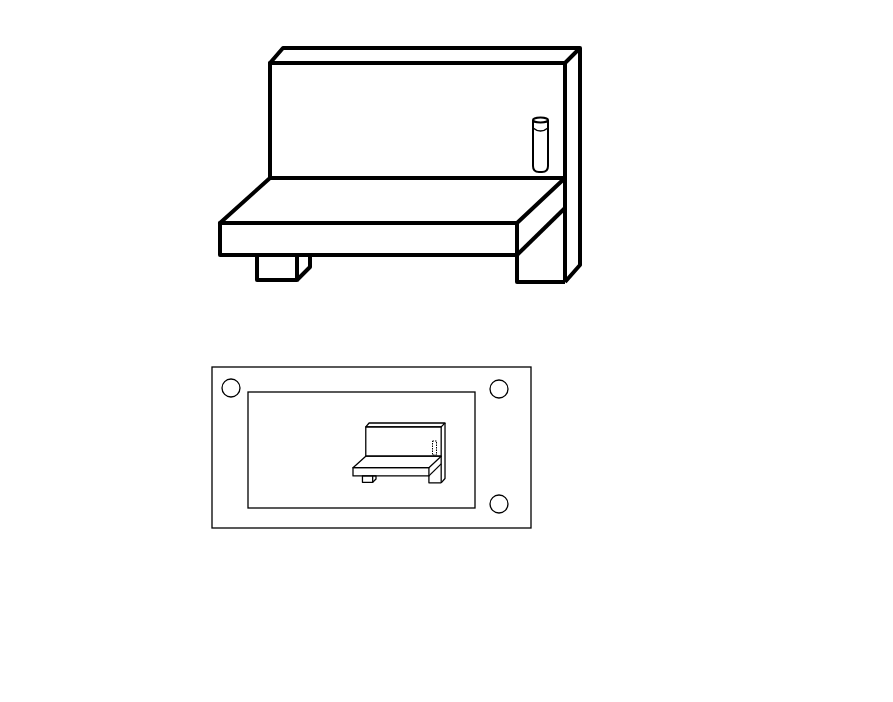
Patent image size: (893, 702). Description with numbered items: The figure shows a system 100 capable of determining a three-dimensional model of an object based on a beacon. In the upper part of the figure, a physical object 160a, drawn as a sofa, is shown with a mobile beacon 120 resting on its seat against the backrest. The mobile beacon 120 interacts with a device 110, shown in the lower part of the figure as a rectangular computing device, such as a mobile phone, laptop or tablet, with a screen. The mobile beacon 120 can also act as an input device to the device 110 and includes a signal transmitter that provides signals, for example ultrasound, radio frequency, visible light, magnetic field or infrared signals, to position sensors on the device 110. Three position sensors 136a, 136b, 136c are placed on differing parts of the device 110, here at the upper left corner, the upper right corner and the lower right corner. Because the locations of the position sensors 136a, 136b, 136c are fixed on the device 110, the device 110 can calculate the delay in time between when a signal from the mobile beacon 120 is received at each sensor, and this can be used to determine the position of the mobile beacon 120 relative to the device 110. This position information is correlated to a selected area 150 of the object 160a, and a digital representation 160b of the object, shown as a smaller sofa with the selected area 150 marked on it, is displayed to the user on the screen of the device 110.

The system 100 is at (76, 80).
The object 160a is at (268, 62).
The mobile beacon 120 is at (531, 146).
The device 110 is at (422, 561).
The position sensor 136a is at (221, 388).
The position sensor 136b is at (508, 390).
The position sensor 136c is at (508, 505).
The digital representation 160b is at (365, 435).
The selected area 150 is at (431, 445).